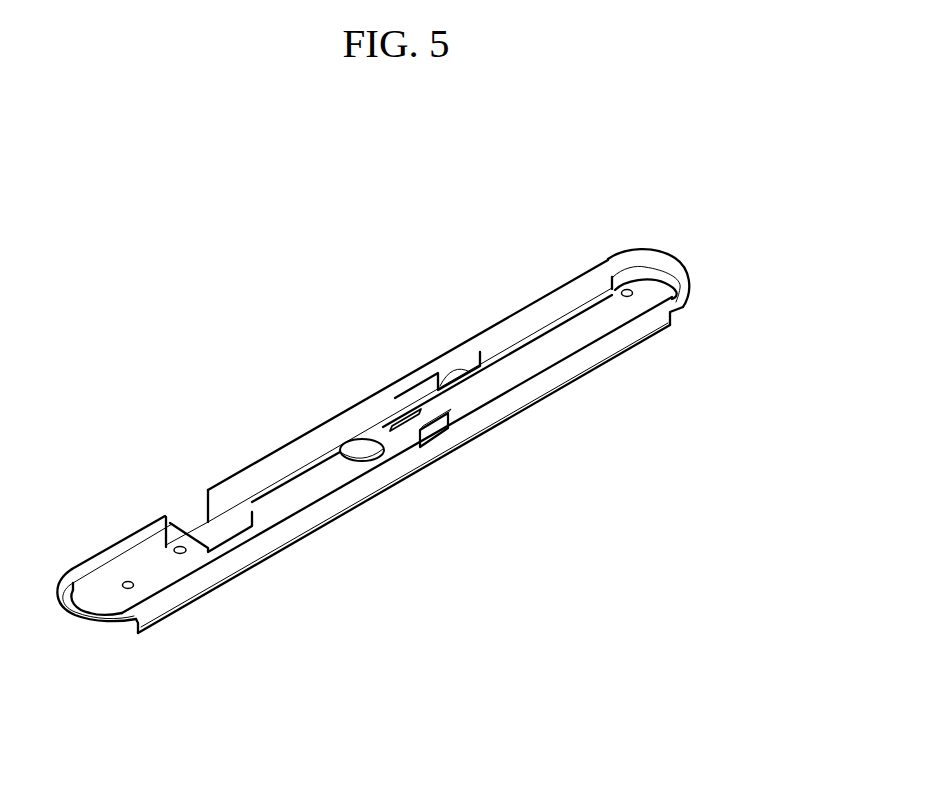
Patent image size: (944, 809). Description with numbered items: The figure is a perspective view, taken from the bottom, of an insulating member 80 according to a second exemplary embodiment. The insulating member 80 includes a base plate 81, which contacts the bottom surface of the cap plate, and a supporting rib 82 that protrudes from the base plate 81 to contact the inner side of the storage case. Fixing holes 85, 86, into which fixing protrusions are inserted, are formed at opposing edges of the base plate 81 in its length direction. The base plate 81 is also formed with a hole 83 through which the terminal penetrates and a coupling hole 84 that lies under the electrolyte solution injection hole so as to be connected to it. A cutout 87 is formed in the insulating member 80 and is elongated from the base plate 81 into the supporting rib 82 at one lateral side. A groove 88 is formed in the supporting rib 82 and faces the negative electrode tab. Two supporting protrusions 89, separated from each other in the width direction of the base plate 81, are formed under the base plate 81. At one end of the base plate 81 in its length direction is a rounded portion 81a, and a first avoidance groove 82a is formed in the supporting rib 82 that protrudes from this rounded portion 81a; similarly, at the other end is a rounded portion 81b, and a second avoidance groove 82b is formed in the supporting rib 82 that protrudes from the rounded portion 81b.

The insulating member 80 is at (557, 252).
The base plate 81 is at (520, 366).
The rounded portion 81a is at (681, 260).
The rounded portion 81b is at (63, 594).
The supporting rib 82 is at (306, 436).
The first avoidance groove 82a is at (688, 304).
The second avoidance groove 82b is at (104, 626).
The hole 83 is at (359, 462).
The coupling hole 84 is at (181, 555).
The fixing hole 85 is at (627, 298).
The fixing hole 86 is at (128, 589).
The cutout 87 is at (198, 528).
The groove 88 is at (460, 372).
The supporting protrusions 89 is at (401, 428).